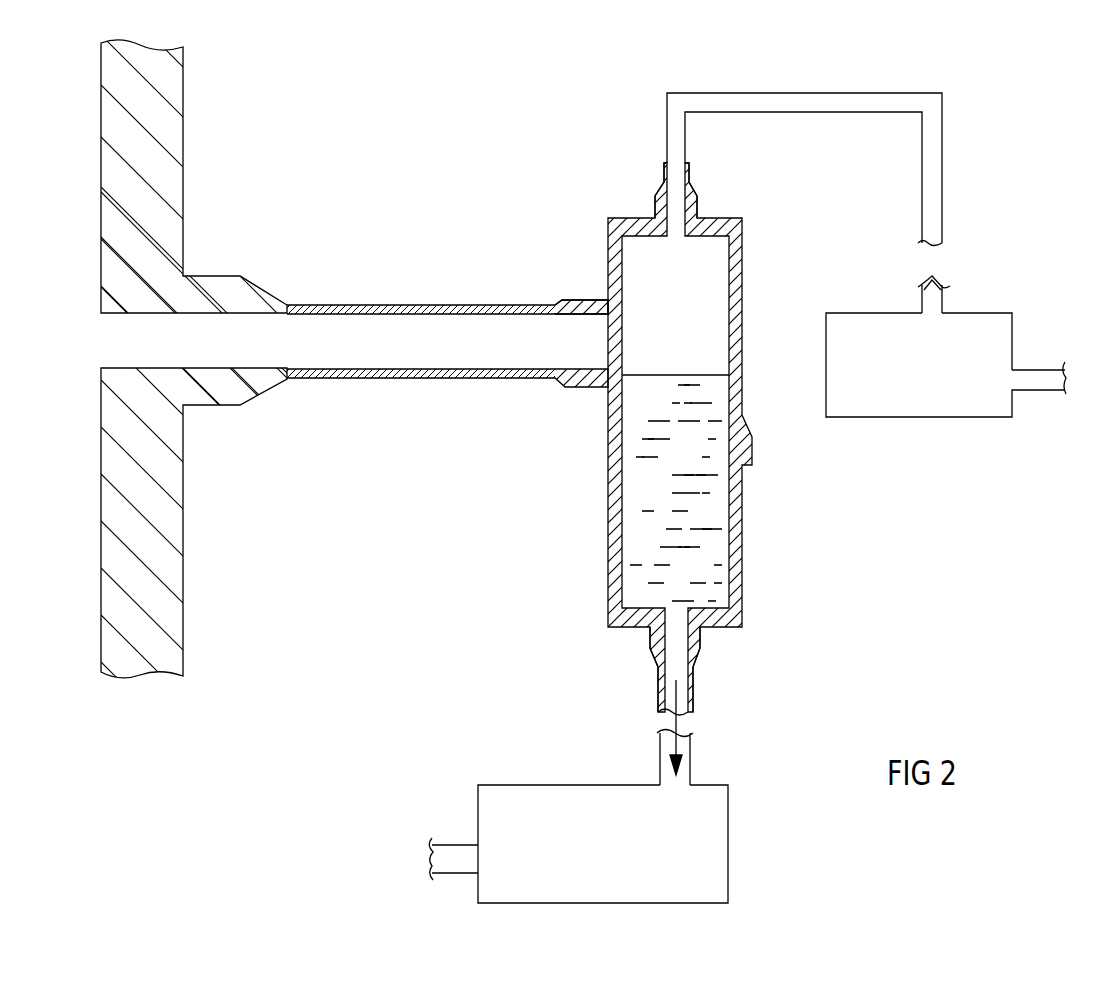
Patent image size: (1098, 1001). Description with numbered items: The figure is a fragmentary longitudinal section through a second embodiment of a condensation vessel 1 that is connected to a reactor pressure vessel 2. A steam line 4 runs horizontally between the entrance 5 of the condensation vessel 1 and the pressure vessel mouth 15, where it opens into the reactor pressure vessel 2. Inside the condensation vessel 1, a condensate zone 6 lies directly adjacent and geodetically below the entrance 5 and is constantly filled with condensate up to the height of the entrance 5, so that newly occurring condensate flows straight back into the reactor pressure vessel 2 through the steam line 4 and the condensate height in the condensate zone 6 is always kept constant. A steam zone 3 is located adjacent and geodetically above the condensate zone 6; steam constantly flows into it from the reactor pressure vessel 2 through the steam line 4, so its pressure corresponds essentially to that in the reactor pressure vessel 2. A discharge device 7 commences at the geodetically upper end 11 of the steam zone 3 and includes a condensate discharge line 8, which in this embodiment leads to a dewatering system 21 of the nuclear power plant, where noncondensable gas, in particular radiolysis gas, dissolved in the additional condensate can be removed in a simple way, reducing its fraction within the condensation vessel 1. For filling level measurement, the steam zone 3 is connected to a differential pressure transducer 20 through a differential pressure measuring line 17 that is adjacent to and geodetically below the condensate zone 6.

The condensation vessel 1 is at (607, 572).
The reactor pressure vessel 2 is at (153, 567).
The steam zone 3 is at (695, 305).
The steam line 4 is at (429, 325).
The entrance 5 is at (575, 338).
The condensate zone 6 is at (710, 525).
The discharge device 7 is at (822, 89).
The condensate discharge line 8 is at (942, 195).
The upper end 11 is at (675, 248).
The pressure vessel mouth 15 is at (260, 342).
The differential pressure measuring line 17 is at (685, 695).
The differential pressure transducer 20 is at (730, 848).
The dewatering system 21 is at (970, 422).